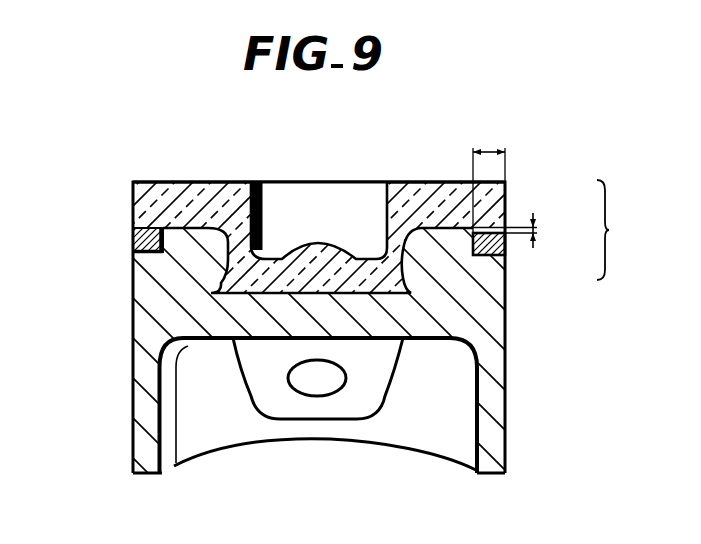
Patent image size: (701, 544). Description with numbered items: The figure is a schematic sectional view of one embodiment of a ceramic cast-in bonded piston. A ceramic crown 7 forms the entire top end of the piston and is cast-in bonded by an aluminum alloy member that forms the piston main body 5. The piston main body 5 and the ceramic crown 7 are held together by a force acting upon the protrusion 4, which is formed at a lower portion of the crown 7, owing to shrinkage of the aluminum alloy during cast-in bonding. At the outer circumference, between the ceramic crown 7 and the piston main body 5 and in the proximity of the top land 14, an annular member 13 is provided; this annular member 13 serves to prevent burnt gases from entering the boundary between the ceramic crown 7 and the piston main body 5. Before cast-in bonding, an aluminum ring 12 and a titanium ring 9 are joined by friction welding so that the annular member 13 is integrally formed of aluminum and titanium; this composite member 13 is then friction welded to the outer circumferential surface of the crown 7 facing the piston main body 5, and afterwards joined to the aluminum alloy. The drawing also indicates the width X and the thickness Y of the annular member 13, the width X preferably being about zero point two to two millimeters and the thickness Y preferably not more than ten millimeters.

The protrusion 4 is at (212, 291).
The piston main body 5 is at (481, 338).
The ceramic crown 7 is at (418, 182).
The titanium ring 9 is at (506, 250).
The aluminum ring 12 is at (506, 203).
The annular member 13 is at (619, 230).
The top land 14 is at (133, 239).
The width of the annular member X is at (515, 230).
The thickness of the annular member Y is at (489, 138).